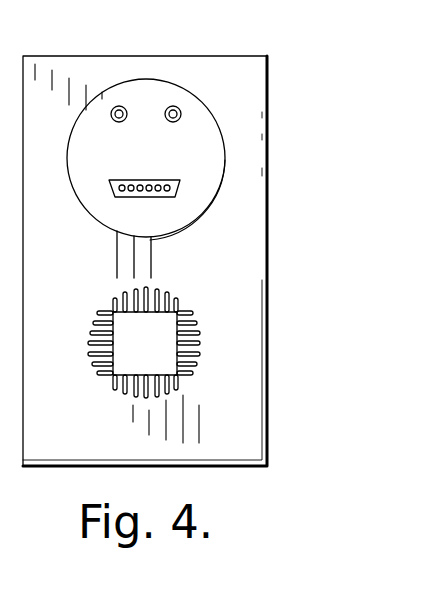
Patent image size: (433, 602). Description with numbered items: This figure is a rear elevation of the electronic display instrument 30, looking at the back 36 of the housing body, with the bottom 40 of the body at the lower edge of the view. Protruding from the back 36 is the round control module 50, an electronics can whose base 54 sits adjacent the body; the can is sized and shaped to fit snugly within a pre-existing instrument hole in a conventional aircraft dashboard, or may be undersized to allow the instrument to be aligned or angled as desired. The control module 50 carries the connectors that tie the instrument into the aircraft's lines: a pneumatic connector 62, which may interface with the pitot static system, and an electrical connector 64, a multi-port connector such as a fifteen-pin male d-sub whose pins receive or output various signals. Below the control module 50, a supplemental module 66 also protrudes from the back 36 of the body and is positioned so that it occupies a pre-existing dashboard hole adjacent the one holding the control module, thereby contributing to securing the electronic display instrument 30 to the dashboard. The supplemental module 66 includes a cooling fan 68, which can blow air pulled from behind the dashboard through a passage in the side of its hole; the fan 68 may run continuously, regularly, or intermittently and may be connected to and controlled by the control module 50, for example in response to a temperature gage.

The electronic display instrument 30 is at (214, 33).
The back 36 is at (225, 247).
The bottom 40 is at (33, 5).
The control module 50 is at (205, 140).
The base 54 is at (243, 91).
The pneumatic connector 62 is at (119, 104).
The electrical connector 64 is at (178, 188).
The supplemental module 66 is at (160, 347).
The cooling fan 68 is at (175, 302).